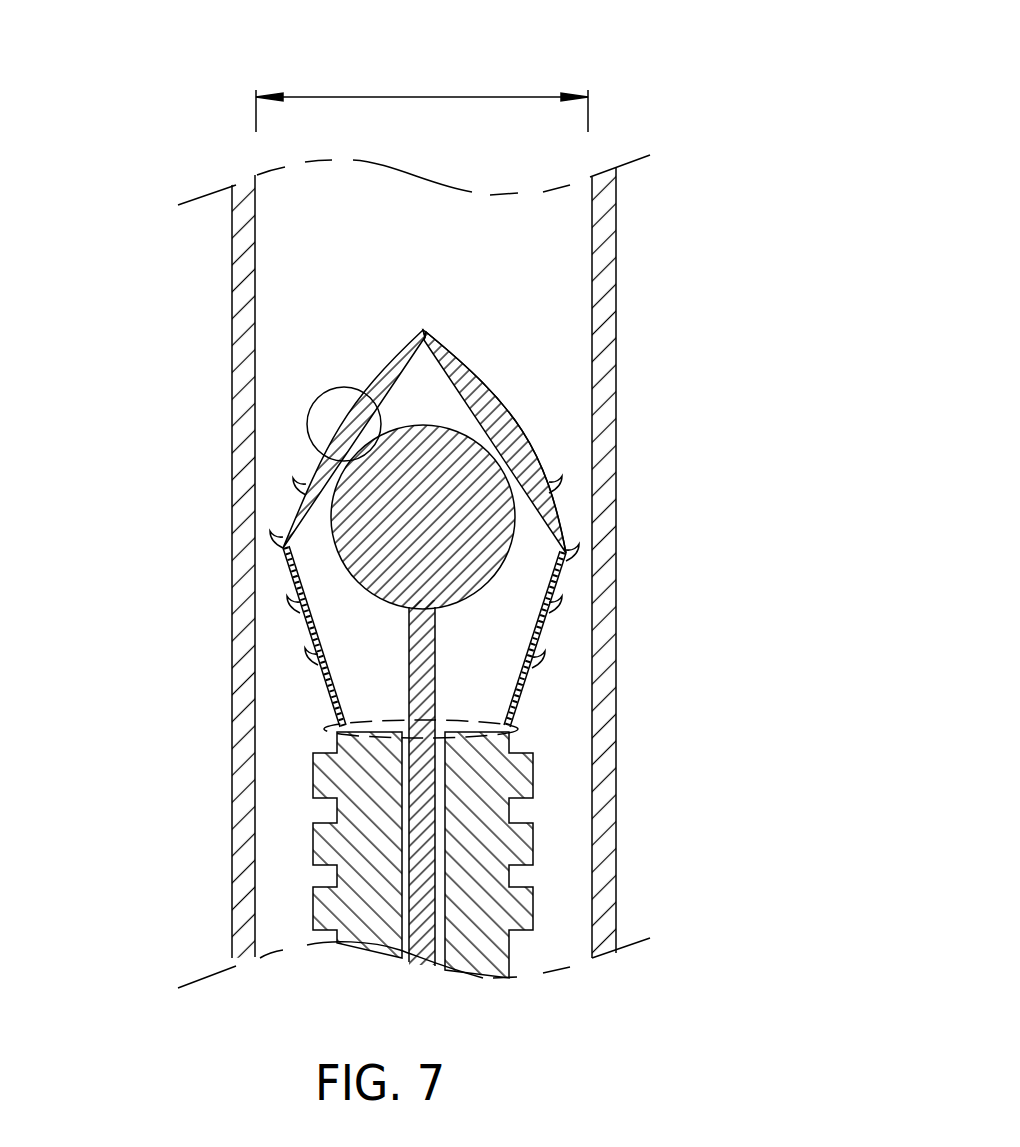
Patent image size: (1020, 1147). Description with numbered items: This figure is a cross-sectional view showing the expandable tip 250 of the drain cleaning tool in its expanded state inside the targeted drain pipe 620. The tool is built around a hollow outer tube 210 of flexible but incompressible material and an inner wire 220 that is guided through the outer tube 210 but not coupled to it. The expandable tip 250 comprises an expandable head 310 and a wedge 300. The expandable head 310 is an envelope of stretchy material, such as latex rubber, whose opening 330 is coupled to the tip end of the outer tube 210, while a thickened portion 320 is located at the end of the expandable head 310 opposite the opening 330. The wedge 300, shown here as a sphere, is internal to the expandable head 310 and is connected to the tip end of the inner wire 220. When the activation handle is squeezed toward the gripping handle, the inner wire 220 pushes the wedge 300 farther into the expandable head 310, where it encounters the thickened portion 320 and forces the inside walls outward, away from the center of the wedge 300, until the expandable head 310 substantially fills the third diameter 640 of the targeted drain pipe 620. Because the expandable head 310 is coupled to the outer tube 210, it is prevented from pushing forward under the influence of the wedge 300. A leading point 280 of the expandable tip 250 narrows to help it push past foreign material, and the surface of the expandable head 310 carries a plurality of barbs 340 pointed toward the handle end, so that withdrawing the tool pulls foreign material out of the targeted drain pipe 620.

The outer tube 210 is at (533, 775).
The inner wire 220 is at (437, 940).
The expandable tip 250 is at (168, 725).
The leading point 280 is at (441, 328).
The wedge 300 is at (447, 423).
The expandable head 310 is at (557, 446).
The thickened portion 320 is at (320, 408).
The opening 330 is at (362, 738).
The barbs 340 is at (568, 648).
The targeted drain pipe 620 is at (615, 888).
The third diameter 640 is at (408, 97).